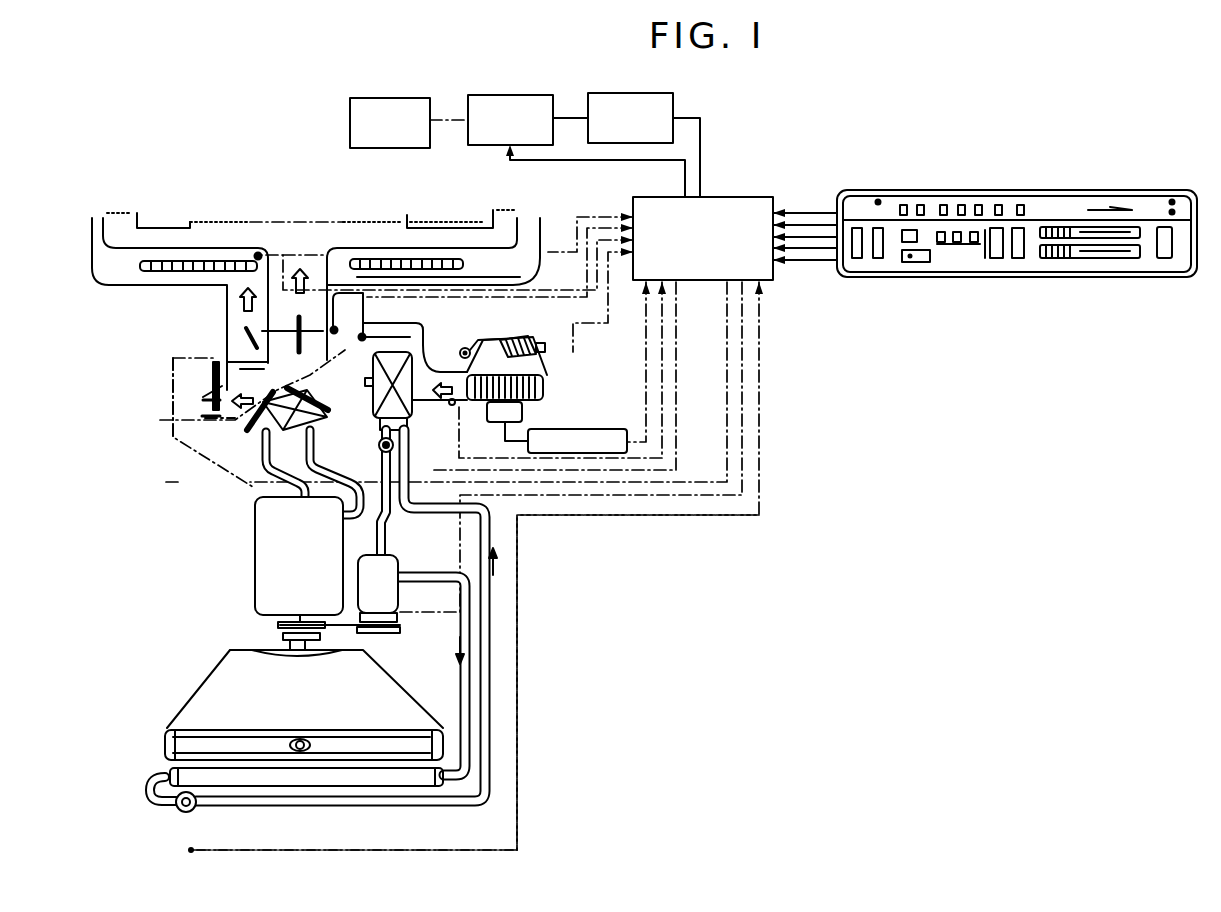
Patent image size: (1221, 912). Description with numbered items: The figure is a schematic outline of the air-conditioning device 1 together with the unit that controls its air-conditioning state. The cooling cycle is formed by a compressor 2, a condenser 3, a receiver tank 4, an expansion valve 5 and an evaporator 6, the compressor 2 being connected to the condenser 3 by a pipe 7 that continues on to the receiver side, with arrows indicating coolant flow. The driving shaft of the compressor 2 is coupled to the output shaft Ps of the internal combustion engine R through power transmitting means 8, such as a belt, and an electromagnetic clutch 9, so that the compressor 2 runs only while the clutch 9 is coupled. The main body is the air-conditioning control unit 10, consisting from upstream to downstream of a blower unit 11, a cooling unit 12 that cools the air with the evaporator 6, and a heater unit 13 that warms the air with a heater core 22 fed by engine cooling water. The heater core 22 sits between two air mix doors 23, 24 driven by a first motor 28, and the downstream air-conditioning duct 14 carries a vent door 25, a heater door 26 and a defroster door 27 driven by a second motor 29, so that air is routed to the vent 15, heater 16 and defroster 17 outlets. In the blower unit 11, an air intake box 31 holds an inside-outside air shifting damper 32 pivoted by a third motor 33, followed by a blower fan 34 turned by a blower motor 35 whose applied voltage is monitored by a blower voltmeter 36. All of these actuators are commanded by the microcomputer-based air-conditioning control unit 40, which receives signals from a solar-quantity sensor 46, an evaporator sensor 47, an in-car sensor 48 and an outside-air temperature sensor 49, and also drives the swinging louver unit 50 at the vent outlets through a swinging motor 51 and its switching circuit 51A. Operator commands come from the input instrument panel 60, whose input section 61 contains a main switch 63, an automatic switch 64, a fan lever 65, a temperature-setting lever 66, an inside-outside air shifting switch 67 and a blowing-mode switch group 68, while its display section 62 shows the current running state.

The air-conditioning device 1 is at (553, 583).
The compressor 2 is at (400, 563).
The condenser 3 is at (162, 770).
The receiver tank 4 is at (177, 812).
The expansion valve 5 is at (397, 450).
The evaporator 6 is at (418, 405).
The pipe 7 is at (475, 668).
The power transmitting means 8 is at (398, 633).
The electromagnetic clutch 9 is at (398, 615).
The air-conditioning control unit 10 is at (188, 446).
The blower unit 11 is at (550, 373).
The cooling unit 12 is at (399, 341).
The heater unit 13 is at (255, 436).
The air-conditioning duct 14 is at (252, 388).
The vent 15 is at (115, 220).
The heater 16 is at (205, 397).
The defroster 17 is at (92, 218).
The heater core 22 is at (293, 495).
The air mix door 23 is at (363, 336).
The air mix door 24 is at (250, 430).
The vent door 25 is at (243, 322).
The heater door 26 is at (205, 420).
The defroster door 27 is at (235, 345).
The first motor 28 is at (365, 493).
The second motor 29 is at (213, 362).
The air intake box 31 is at (545, 351).
The inside-outside air shifting damper 32 is at (527, 340).
The third motor 33 is at (466, 347).
The blower fan 34 is at (545, 382).
The blower motor 35 is at (524, 408).
The blower voltmeter 36 is at (622, 428).
The air-conditioning control unit 40 is at (766, 197).
The solar-quantity sensor 46 is at (257, 255).
The evaporator sensor 47 is at (454, 404).
The in-car sensor 48 is at (334, 328).
The outside-air temperature sensor 49 is at (192, 850).
The swinging louver unit 50 is at (432, 104).
The swinging motor 51 is at (553, 100).
The switching circuit 51A is at (673, 100).
The input instrument panel 60 is at (983, 193).
The input section 61 is at (1187, 272).
The display section 62 is at (1146, 211).
The main switch 63 is at (1160, 260).
The automatic switch 64 is at (919, 263).
The fan lever 65 is at (1057, 227).
The temperature-setting lever 66 is at (1053, 259).
The inside-outside air shifting switch 67 is at (909, 230).
The blowing-mode switch group 68 is at (1018, 260).
The internal combustion engine R is at (253, 576).
The output shaft Ps is at (278, 626).